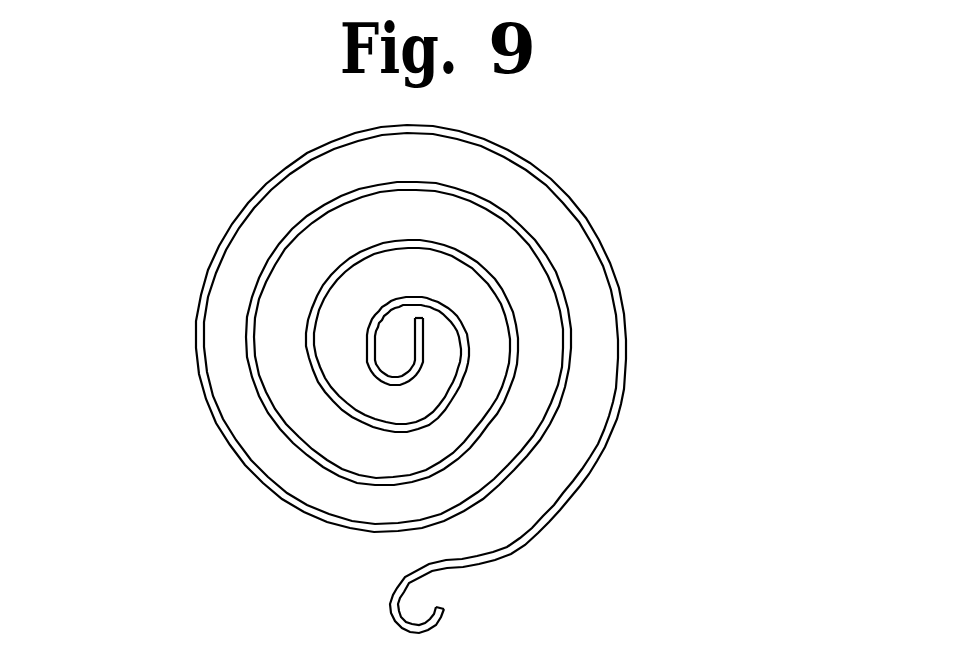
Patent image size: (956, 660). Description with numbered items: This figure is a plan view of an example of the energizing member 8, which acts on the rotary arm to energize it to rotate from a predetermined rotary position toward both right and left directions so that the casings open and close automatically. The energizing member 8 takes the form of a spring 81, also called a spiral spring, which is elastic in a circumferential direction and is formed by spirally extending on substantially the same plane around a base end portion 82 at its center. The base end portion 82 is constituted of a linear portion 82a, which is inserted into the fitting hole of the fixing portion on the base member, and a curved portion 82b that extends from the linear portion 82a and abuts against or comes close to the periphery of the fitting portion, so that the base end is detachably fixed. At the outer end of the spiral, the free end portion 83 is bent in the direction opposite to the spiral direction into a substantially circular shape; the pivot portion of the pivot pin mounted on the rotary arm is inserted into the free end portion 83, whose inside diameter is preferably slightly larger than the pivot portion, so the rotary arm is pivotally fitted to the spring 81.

The energizing member 8 is at (407, 379).
The spring 81 is at (600, 440).
The base end portion 82 is at (407, 421).
The linear portion 82a is at (419, 340).
The curved portion 82b is at (417, 341).
The free end portion 83 is at (390, 609).